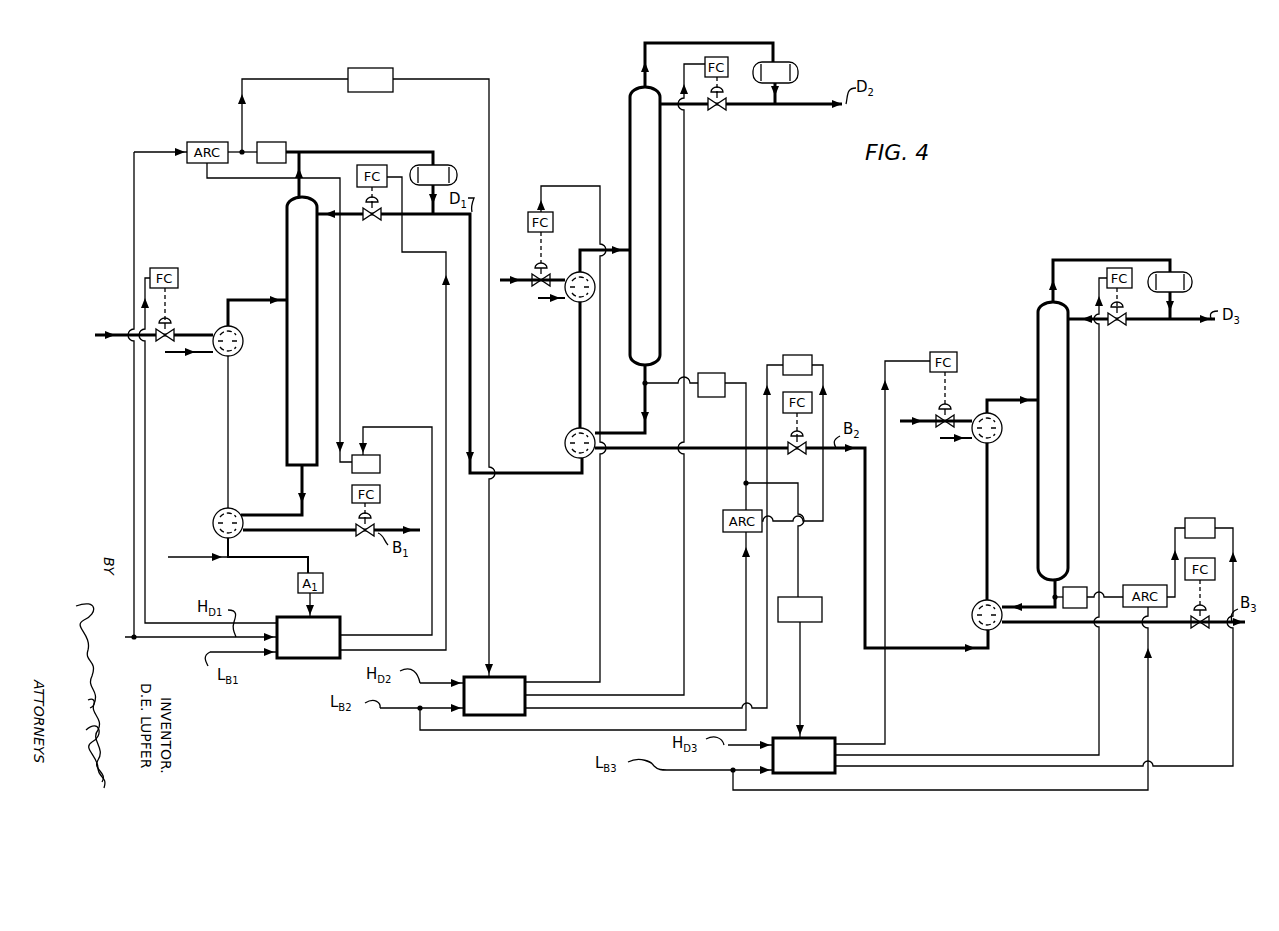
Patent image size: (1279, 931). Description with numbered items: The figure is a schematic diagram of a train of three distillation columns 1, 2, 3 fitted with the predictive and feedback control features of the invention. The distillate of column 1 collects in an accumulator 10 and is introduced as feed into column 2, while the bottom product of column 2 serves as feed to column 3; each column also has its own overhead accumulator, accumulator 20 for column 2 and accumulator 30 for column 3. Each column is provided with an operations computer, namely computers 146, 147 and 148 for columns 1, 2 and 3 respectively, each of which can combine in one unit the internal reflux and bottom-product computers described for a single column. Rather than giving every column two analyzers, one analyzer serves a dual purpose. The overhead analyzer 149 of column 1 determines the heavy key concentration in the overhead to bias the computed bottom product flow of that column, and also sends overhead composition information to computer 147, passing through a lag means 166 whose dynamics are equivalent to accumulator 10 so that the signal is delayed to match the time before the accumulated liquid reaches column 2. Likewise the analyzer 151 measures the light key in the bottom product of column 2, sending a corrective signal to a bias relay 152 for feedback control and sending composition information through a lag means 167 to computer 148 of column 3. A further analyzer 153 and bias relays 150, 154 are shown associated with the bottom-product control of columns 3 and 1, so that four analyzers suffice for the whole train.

The column 1 is at (296, 340).
The column 2 is at (639, 209).
The column 3 is at (1047, 429).
The accumulator 10 is at (440, 165).
The overhead accumulator of column 2 20 is at (784, 64).
The overhead accumulator of column 3 30 is at (1193, 283).
The operations computer 146 is at (290, 664).
The operations computer 147 is at (514, 677).
The operations computer 148 is at (818, 738).
The overhead analyzer 149 is at (282, 143).
The bias relay BR 150 is at (380, 457).
The analyzer 151 is at (713, 373).
The bias relay 152 is at (808, 355).
The analyzer A4 153 is at (1080, 587).
The bias relay BR 154 is at (1203, 518).
The lag means 166 is at (363, 67).
The lag means 167 is at (812, 623).